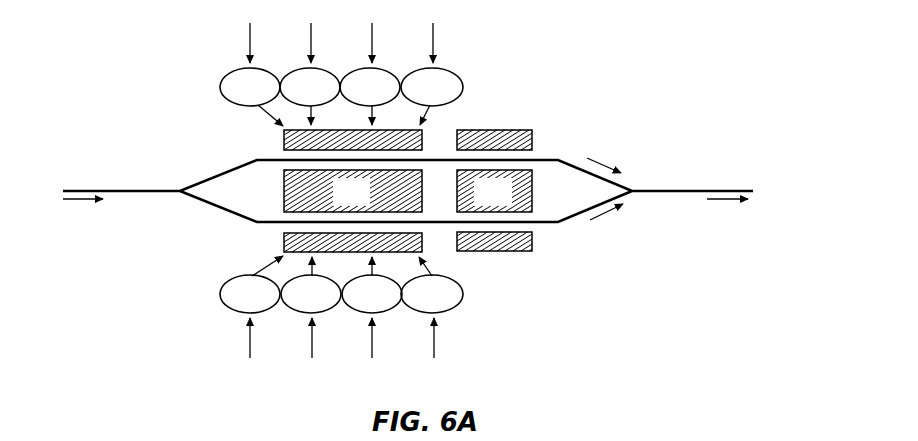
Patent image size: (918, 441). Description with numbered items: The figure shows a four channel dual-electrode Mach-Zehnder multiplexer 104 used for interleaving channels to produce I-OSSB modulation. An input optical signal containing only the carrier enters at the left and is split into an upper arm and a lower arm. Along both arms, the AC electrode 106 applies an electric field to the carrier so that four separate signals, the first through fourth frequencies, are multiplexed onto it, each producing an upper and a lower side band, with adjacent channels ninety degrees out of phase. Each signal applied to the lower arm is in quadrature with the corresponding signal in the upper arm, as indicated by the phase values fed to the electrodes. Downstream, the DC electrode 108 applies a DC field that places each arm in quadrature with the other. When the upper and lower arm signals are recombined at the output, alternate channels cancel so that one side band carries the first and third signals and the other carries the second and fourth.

The Mach-Zehnder multiplexer 104 is at (429, 193).
The AC electrode 106 is at (284, 235).
The DC electrode 108 is at (515, 251).